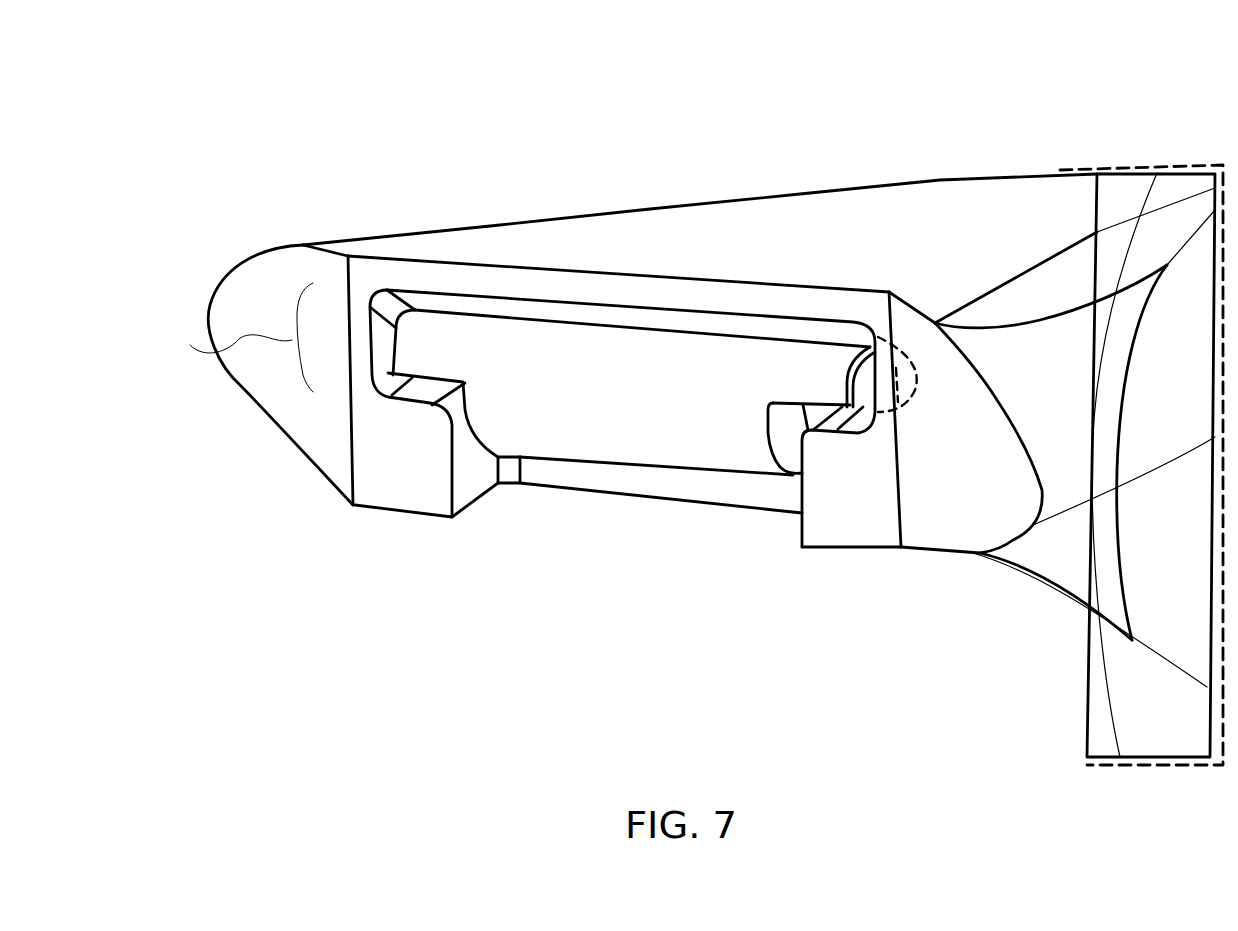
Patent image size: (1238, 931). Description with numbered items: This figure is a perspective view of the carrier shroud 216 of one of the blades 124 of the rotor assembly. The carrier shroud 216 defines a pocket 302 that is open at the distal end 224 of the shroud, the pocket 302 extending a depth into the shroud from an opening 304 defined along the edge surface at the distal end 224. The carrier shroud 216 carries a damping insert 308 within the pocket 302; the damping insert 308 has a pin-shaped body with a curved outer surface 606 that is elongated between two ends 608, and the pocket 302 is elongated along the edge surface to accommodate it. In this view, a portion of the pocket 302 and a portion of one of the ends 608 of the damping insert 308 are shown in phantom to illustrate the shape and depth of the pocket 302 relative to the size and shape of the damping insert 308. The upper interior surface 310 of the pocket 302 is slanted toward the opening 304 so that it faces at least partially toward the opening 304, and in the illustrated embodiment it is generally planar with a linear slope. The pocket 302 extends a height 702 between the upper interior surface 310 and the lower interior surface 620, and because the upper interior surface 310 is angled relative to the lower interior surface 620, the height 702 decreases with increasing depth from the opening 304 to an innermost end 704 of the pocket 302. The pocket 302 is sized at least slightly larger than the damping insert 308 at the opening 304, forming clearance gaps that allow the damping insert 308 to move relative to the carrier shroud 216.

The blade 124 is at (762, 108).
The carrier shroud 216 is at (727, 217).
The distal end 224 is at (354, 509).
The pocket 302 is at (440, 300).
The opening 304 is at (363, 378).
The damping insert 308 is at (580, 353).
The upper interior surface 310 is at (493, 307).
The curved outer surface 606 is at (637, 347).
The ends 608 is at (863, 378).
The lower interior surface 620 is at (428, 390).
The height 702 is at (229, 337).
The innermost end 704 is at (917, 383).